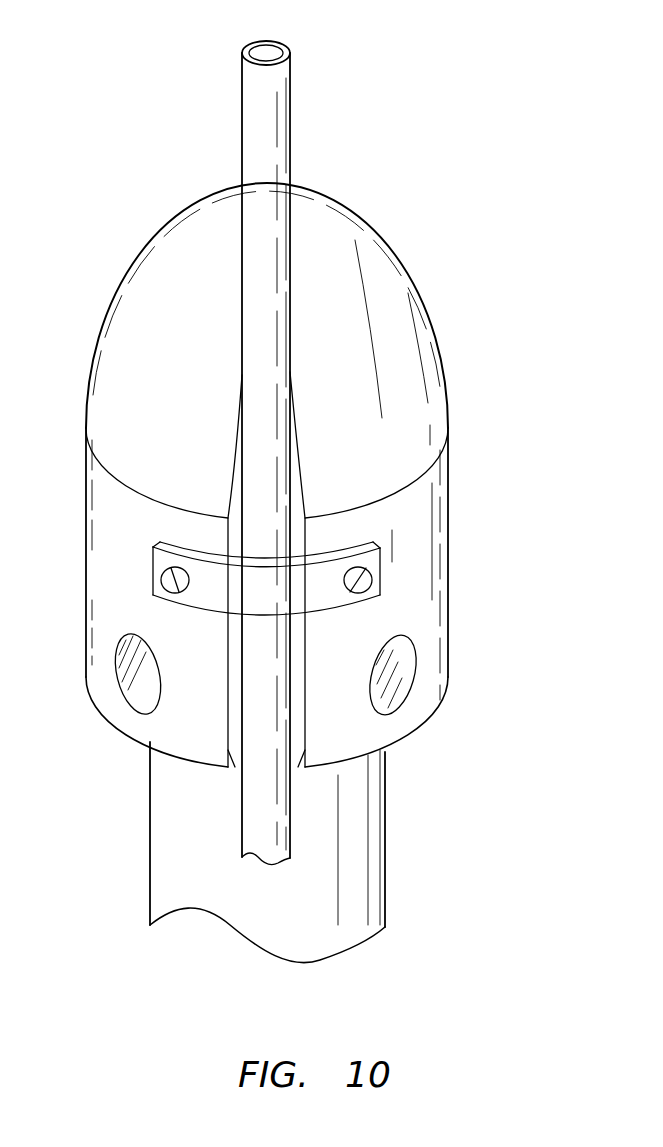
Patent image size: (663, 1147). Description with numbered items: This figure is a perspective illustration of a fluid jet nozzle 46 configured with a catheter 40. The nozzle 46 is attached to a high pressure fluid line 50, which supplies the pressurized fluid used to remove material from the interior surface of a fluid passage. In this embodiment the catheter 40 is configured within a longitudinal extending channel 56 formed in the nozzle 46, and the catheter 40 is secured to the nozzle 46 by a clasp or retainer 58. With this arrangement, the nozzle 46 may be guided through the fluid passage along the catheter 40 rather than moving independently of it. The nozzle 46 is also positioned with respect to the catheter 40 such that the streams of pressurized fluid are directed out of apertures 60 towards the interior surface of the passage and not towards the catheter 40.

The catheter 40 is at (292, 135).
The fluid jet nozzle 46 is at (449, 513).
The high pressure fluid line 50 is at (150, 848).
The longitudinal extending channel 56 is at (297, 465).
The clasp or retainer 58 is at (327, 597).
The apertures 60 is at (140, 712).